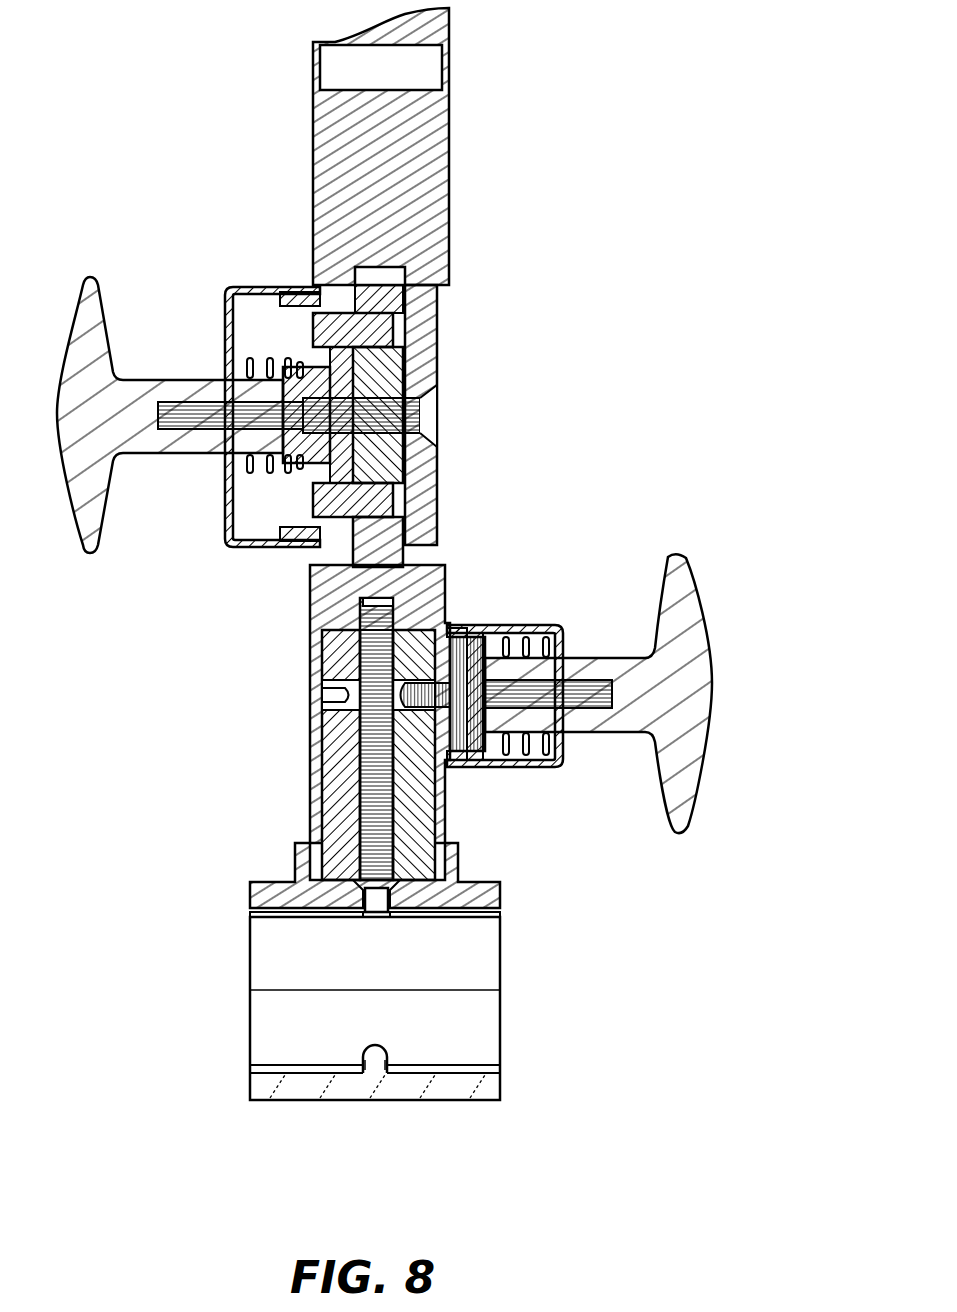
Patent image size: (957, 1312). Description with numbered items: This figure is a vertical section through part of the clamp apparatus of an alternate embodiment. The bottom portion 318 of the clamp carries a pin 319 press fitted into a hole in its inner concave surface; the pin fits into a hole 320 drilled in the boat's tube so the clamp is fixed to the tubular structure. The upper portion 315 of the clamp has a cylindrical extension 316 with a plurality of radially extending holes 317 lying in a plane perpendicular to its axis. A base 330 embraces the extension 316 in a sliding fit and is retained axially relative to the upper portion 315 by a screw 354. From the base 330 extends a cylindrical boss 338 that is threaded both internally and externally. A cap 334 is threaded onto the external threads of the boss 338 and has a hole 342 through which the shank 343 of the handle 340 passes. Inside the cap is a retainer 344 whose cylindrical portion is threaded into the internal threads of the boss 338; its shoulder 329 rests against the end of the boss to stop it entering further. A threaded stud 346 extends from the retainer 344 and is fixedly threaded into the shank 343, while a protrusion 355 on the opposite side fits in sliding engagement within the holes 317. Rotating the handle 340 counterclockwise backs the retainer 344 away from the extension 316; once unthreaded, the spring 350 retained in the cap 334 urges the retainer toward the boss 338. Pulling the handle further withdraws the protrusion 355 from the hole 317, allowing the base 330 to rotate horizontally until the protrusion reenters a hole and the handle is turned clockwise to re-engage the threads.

The upper portion 315 is at (292, 862).
The cylindrical extension 316 is at (328, 786).
The radially extending holes 317 is at (322, 697).
The bottom portion 318 is at (265, 1085).
The pin 319 is at (370, 1047).
The hole 320 is at (393, 1058).
The shoulder 329 is at (478, 648).
The base 330 is at (310, 582).
The cap 334 is at (517, 768).
The cylindrical boss 338 is at (455, 762).
The handle 340 is at (705, 622).
The hole 342 is at (566, 738).
The shank 343 is at (622, 740).
The retainer 344 is at (468, 634).
The threaded stud 346 is at (553, 655).
The spring 350 is at (528, 650).
The screw 354 is at (400, 902).
The protrusion 355 is at (413, 688).